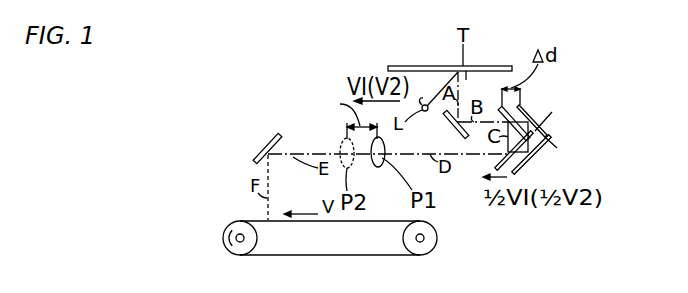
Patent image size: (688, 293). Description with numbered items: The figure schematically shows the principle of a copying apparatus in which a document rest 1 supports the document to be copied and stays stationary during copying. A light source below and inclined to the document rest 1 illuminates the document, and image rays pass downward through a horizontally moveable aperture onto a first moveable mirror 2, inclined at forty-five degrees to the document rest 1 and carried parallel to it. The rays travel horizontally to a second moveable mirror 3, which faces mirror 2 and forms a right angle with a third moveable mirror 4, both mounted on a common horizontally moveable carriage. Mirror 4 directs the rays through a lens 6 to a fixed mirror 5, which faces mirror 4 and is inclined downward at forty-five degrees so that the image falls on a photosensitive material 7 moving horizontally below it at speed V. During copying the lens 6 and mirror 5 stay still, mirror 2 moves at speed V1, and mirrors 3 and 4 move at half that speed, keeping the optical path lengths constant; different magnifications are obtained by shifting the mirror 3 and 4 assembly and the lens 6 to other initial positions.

The document rest 1 is at (493, 65).
The first moveable mirror 2 is at (454, 124).
The second moveable mirror 3 is at (500, 109).
The third moveable mirror 4 is at (497, 169).
The fixed mirror 5 is at (270, 143).
The lens 6 is at (381, 160).
The photosensitive material 7 is at (255, 220).